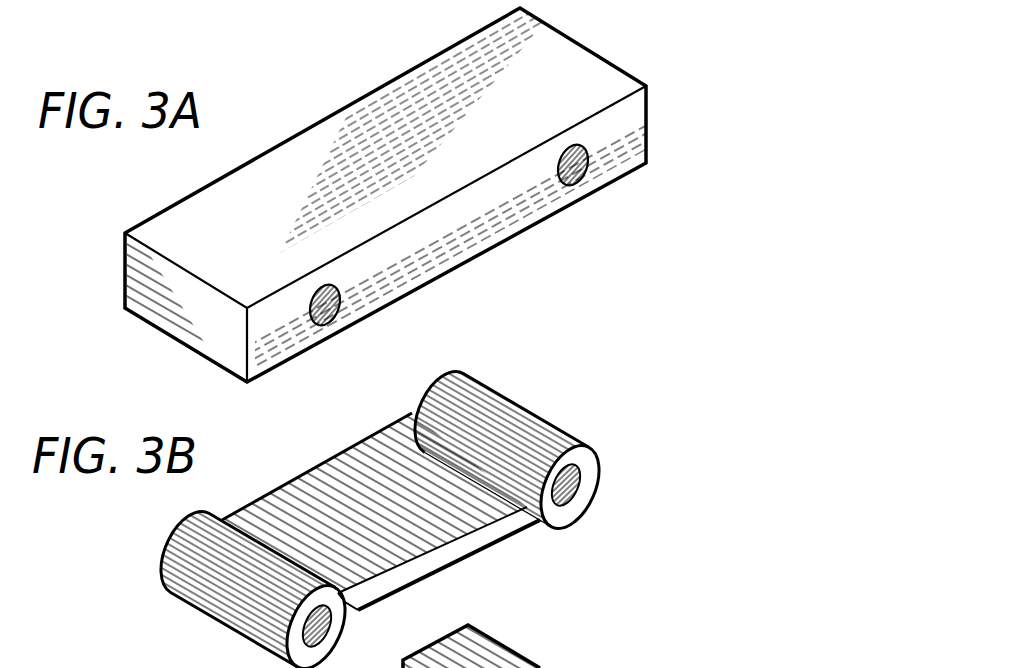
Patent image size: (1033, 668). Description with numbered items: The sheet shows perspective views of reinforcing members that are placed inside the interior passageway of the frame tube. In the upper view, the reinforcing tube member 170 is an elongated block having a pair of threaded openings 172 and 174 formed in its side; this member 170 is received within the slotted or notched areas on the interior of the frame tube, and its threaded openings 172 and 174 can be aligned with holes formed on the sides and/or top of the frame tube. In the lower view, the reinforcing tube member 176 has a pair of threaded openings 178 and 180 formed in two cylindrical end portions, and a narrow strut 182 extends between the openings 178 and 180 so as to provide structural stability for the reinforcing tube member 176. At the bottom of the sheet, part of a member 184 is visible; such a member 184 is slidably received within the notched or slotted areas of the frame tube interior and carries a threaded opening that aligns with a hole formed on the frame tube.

In FIG. 3A, the reinforcing tube member 170 is at (592, 62).
In FIG. 3A, the threaded opening 172 is at (588, 172).
In FIG. 3A, the threaded opening 174 is at (340, 305).
In FIG. 3B, the reinforcing tube member 176 is at (520, 405).
In FIG. 3B, the threaded opening 178 is at (580, 483).
In FIG. 3B, the threaded opening 180 is at (335, 620).
In FIG. 3B, the narrow strut 182 is at (513, 527).
In FIG. 3B, the member 184 is at (575, 667).